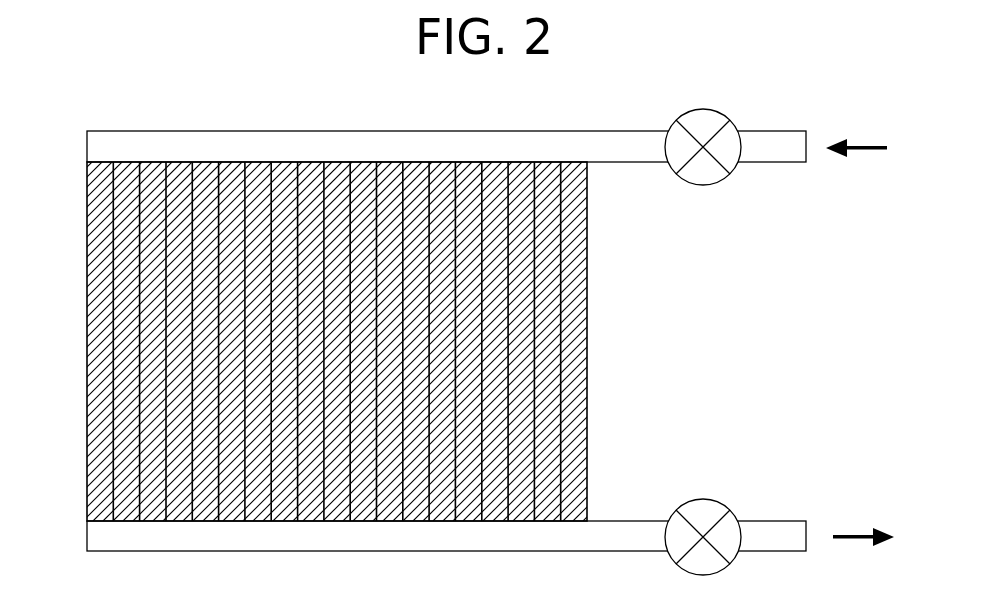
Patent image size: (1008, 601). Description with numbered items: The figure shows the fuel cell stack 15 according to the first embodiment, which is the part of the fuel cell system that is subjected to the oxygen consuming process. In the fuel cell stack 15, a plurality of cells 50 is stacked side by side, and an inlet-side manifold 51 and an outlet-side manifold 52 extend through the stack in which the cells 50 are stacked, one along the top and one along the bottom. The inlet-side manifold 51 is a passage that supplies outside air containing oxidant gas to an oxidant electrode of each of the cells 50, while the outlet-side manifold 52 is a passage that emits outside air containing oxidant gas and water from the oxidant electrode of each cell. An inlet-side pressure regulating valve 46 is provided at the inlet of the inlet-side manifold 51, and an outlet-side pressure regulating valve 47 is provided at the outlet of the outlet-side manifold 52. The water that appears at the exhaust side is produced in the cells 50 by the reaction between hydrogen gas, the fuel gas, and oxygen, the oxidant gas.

The fuel cell stack 15 is at (185, 86).
The inlet-side pressure regulating valve 46 is at (703, 109).
The outlet-side pressure regulating valve 47 is at (705, 499).
The cells 50 is at (87, 342).
The inlet-side manifold 51 is at (285, 131).
The outlet-side manifold 52 is at (313, 552).